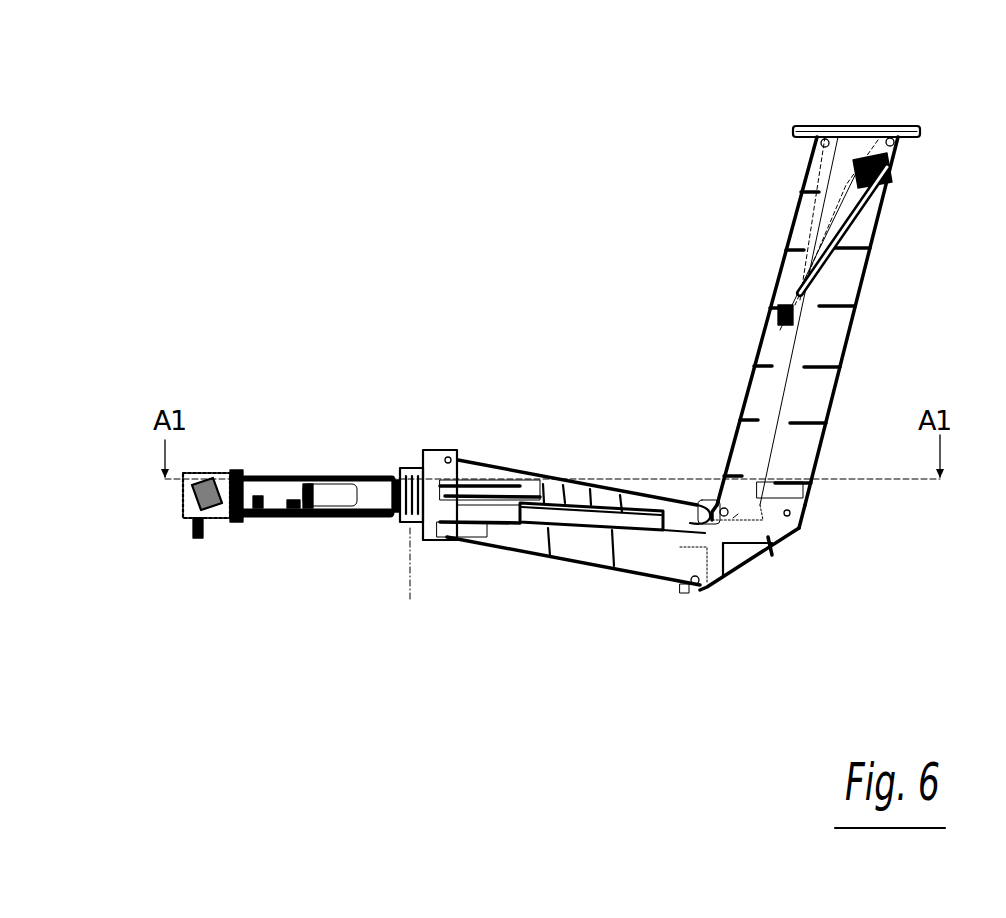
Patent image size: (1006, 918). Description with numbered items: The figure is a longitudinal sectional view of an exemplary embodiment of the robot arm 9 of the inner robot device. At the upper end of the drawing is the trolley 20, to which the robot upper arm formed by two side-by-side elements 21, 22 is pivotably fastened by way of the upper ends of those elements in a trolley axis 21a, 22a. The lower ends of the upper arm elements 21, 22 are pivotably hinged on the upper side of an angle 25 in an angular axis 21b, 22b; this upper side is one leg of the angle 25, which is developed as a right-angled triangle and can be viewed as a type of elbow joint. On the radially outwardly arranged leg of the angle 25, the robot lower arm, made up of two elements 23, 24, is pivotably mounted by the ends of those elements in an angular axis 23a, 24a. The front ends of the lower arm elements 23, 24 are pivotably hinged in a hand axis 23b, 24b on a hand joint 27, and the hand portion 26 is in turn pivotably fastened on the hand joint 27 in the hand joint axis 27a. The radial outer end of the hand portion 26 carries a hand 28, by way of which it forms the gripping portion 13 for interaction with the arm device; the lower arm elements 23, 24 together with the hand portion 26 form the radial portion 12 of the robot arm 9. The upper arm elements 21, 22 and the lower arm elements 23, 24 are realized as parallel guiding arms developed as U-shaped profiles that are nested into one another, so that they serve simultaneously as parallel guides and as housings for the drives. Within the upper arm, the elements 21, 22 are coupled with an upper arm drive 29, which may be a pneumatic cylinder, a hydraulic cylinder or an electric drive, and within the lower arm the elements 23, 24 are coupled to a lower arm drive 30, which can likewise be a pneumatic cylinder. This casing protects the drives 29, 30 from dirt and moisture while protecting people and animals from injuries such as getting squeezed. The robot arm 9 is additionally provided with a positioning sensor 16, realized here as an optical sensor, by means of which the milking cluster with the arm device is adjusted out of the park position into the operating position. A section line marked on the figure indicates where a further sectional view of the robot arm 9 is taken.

The robot arm 9 is at (652, 268).
The radial portion 12 is at (465, 315).
The gripping portion 13 is at (228, 430).
The positioning sensor 16 is at (185, 517).
The trolley 20 is at (857, 133).
The upper arm element 21 is at (780, 277).
The trolley axis 21a is at (825, 135).
The angular axis 21b is at (725, 522).
The upper arm element 22 is at (862, 277).
The trolley axis 22a is at (890, 133).
The angular axis 22b is at (797, 523).
The lower arm element 23 is at (590, 497).
The angular axis 23a is at (690, 513).
The hand axis 23b is at (450, 453).
The lower arm element 24 is at (595, 545).
The angular axis 24a is at (728, 537).
The hand axis 24b is at (455, 540).
The angle 25 is at (768, 542).
The hand portion 26 is at (320, 493).
The hand joint 27 is at (425, 452).
The hand joint axis 27a is at (402, 598).
The hand 28 is at (218, 543).
The upper arm drive 29 is at (823, 241).
The lower arm drive 30 is at (620, 515).